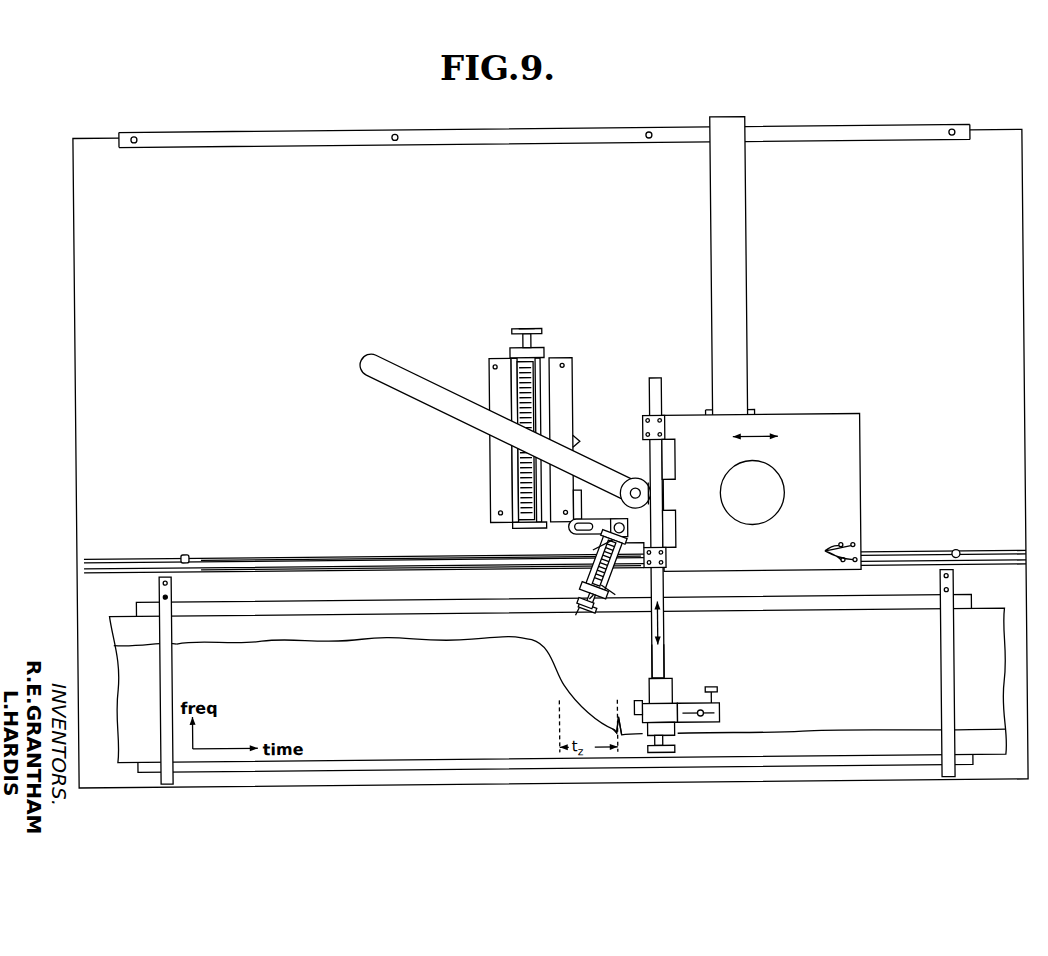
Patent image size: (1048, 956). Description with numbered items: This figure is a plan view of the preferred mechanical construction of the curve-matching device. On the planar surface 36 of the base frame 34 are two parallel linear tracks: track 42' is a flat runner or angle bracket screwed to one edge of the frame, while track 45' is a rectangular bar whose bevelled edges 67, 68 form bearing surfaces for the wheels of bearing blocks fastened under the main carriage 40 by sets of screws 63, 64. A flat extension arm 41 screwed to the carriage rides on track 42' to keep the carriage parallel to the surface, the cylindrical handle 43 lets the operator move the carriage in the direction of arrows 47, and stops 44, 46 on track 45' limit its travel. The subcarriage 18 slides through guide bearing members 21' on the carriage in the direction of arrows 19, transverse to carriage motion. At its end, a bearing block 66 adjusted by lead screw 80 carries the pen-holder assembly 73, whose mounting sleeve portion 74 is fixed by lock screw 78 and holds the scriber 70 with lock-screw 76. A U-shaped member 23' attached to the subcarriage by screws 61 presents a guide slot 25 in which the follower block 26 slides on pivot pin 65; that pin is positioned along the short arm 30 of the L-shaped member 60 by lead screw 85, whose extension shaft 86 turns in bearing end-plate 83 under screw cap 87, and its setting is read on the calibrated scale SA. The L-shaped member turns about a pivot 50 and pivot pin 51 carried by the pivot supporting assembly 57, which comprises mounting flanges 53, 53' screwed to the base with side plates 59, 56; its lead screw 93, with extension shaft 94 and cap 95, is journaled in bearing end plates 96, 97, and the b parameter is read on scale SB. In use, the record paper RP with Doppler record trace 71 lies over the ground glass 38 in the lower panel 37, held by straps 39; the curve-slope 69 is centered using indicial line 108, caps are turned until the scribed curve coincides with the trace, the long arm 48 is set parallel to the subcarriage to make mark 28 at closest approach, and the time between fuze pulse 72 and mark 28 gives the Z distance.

The base frame 34 is at (68, 313).
The linear track 42' is at (544, 121).
The flat extension arm 41 is at (748, 233).
The planar surface 36 is at (890, 302).
The linear track 45' is at (528, 558).
The stop 46 is at (184, 556).
The bevelled edge 67 is at (290, 559).
The bevelled edge 68 is at (372, 573).
The stop 44 is at (958, 560).
The ground glass 38 is at (908, 603).
The lower panel 37 is at (1011, 601).
The mark 28 is at (557, 690).
The record paper RP is at (125, 720).
The curve-slope 69 is at (535, 655).
The fuze actuation pulse 72 is at (612, 724).
The Doppler frequency record trace 71 is at (856, 737).
The straps 39 is at (172, 670).
The main carriage 40 is at (861, 503).
The cylindrical handle 43 is at (786, 500).
The arrows 47 is at (760, 444).
The screws 64 is at (832, 561).
The arrows 19 is at (664, 623).
The subcarriage 18 is at (663, 657).
The guide bearing member 21' is at (689, 492).
The screws 61 is at (675, 527).
The screws 63 is at (668, 565).
The follower block 26 is at (621, 550).
The pivot supporting assembly 57 is at (541, 423).
The mounting flange 53' is at (481, 440).
The mounting flange 53 is at (584, 439).
The calibrated scale SB is at (512, 392).
The side plate 59 is at (552, 420).
The lead screw 93 is at (541, 375).
The side plate 56 is at (512, 366).
The bearing end plate 96 is at (532, 350).
The extension shaft 94 is at (524, 354).
The cap 95 is at (537, 333).
The bearing end plate 97 is at (520, 530).
The L-shaped member 60 is at (576, 445).
The U-shaped member 23' is at (569, 484).
The long arm 48 is at (409, 399).
The pivot 50 is at (622, 488).
The pivot pin 51 is at (640, 481).
The guide slot 25 is at (568, 532).
The pivot pin 65 is at (612, 524).
The bearing end-plate 83 is at (570, 572).
The lead screw 85 is at (578, 592).
The calibrated scale SA is at (592, 555).
The indicial line 108 is at (574, 609).
The screw cap 87 is at (578, 614).
The extension shaft 86 is at (590, 604).
The short arm 30 is at (612, 600).
The bearing block 66 is at (651, 686).
The mounting sleeve portion 74 is at (650, 710).
The pen-holder assembly 73 is at (682, 700).
The scriber 70 is at (702, 720).
The lock-screw 76 is at (710, 698).
The lock screw 78 is at (634, 712).
The lead screw 80 is at (672, 753).